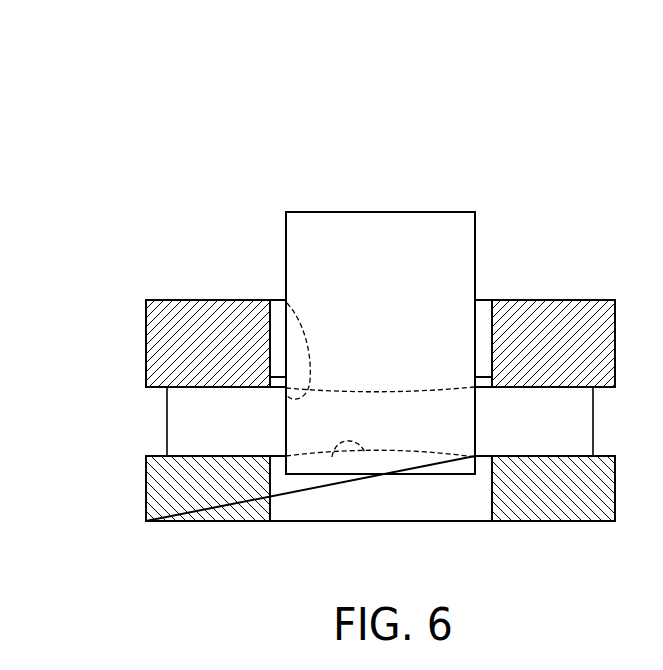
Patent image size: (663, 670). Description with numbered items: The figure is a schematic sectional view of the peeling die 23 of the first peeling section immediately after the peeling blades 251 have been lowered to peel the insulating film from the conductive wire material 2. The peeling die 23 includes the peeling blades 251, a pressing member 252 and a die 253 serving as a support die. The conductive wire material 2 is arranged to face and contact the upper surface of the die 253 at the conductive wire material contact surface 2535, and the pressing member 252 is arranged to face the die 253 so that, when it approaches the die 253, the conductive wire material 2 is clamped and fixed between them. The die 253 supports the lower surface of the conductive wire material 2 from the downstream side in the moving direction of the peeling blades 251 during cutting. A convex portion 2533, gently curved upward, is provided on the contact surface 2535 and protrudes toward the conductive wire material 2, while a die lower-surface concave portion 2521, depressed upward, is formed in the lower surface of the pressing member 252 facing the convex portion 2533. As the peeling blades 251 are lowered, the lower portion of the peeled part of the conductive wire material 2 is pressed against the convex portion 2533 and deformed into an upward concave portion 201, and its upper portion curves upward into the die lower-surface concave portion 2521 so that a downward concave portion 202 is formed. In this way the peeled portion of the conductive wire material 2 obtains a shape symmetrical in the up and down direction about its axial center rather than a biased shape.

The peeling die 23 is at (235, 103).
The peeling blades 251 is at (475, 243).
The pressing member 252 is at (152, 345).
The die lower-surface concave portion 2521 is at (293, 315).
The downward concave portion 202 is at (397, 390).
The conductive wire material 2 is at (182, 428).
The conductive wire material contact surface 2535 is at (247, 456).
The die 253 is at (225, 512).
The convex portion 2533 is at (332, 457).
The upward concave portion 201 is at (415, 453).